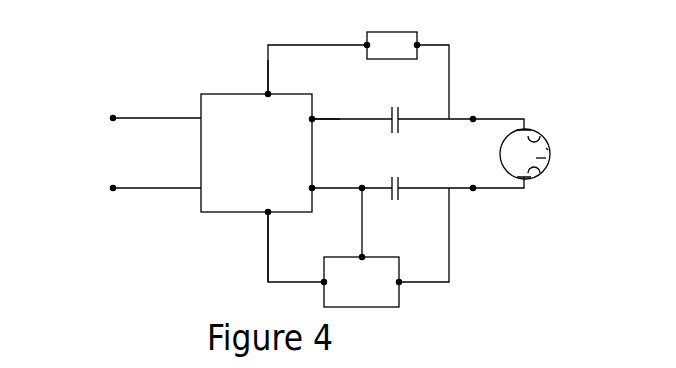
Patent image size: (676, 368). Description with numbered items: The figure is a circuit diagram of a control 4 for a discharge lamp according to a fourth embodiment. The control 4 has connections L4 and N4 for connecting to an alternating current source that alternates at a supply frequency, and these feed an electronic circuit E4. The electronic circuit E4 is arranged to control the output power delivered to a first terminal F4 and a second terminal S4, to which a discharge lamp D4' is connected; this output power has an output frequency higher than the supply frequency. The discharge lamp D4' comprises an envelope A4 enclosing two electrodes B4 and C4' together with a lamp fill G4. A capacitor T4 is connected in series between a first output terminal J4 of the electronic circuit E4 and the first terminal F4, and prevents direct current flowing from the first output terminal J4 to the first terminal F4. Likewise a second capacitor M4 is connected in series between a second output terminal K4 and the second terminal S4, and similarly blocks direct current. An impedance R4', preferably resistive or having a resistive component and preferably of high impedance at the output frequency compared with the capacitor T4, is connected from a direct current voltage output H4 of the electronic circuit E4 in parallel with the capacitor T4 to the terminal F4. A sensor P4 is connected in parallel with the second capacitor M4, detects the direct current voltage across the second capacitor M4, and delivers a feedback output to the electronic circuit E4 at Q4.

The control 4 is at (188, 74).
The connection L4 is at (113, 118).
The connection N4 is at (113, 188).
The direct current voltage output H4 is at (266, 92).
The first output terminal J4 is at (313, 117).
The capacitor T4 is at (399, 116).
The impedance R4' is at (420, 35).
The first terminal F4 is at (474, 116).
The envelope A4 is at (501, 155).
The electrode B4 is at (534, 140).
The discharge lamp D4' is at (576, 133).
The lamp fill G4 is at (544, 158).
The electrode C4' is at (549, 189).
The second terminal S4 is at (475, 191).
The second capacitor M4 is at (404, 198).
The second output terminal K4 is at (313, 190).
The feedback output Q4 is at (268, 250).
The electronic circuit E4 is at (210, 213).
The sensor P4 is at (400, 297).